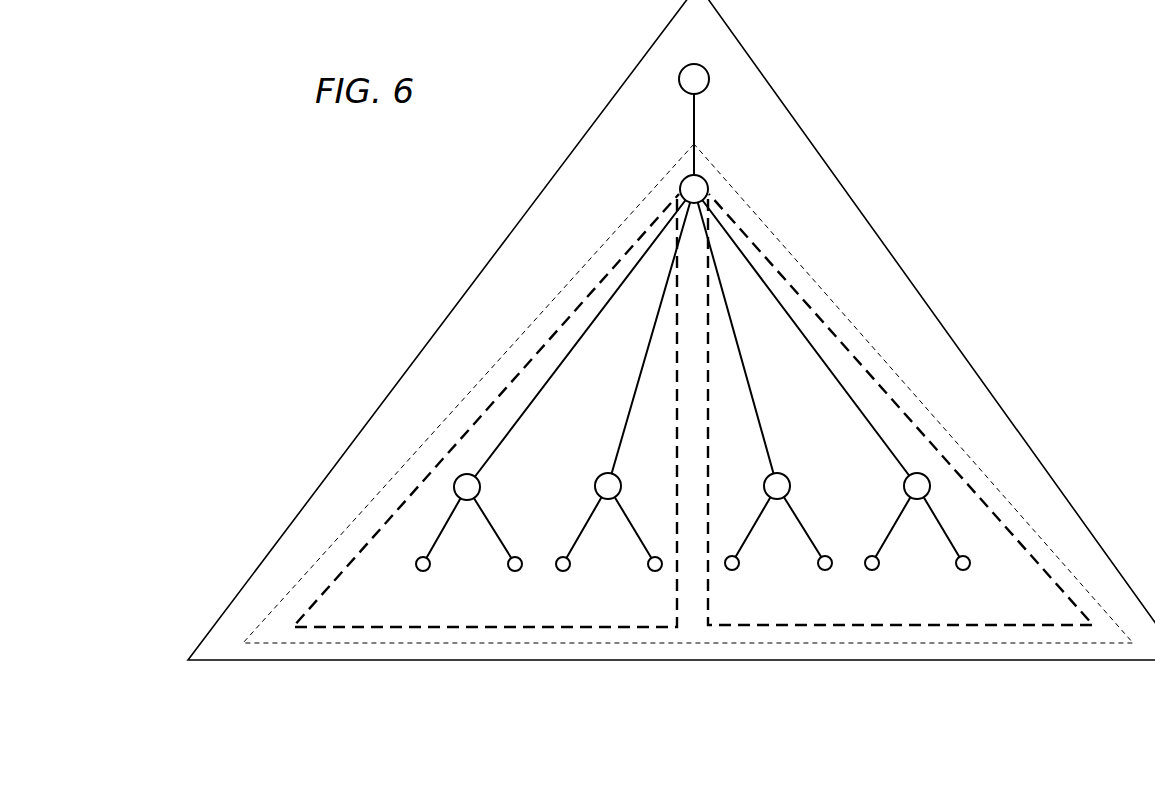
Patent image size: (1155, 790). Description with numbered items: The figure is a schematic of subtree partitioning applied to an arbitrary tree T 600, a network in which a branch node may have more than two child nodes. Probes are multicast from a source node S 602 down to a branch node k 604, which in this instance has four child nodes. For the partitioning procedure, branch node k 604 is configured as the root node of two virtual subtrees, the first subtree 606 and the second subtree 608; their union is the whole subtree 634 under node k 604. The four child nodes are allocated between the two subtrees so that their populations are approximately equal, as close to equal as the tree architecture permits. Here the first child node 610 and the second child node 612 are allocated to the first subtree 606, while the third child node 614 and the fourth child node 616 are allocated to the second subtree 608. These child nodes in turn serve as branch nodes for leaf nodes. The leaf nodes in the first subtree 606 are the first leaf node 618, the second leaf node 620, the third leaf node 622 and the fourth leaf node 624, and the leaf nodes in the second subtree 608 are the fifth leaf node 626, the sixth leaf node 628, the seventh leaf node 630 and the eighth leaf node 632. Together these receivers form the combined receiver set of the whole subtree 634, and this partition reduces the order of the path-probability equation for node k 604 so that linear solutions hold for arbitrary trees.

The arbitrary tree T 600 is at (536, 197).
The source node S 602 is at (709, 85).
The branch node k 604 is at (704, 176).
The subtree T_k,1 606 is at (623, 248).
The subtree T_k,2 608 is at (790, 258).
The child node d_1,1 610 is at (480, 477).
The child node d_2,1 612 is at (598, 476).
The child node d_1,2 614 is at (787, 476).
The child node d_2,2 616 is at (904, 481).
The leaf node R_1,1 618 is at (416, 561).
The leaf node R_2,1 620 is at (508, 563).
The leaf node R_3,1 622 is at (557, 559).
The leaf node R_4,1 624 is at (648, 564).
The leaf node R_1,2 626 is at (740, 563).
The leaf node R_2,2 628 is at (832, 558).
The leaf node R_3,2 630 is at (880, 563).
The leaf node R_4,2 632 is at (970, 565).
The subtree T_k,0 634 is at (518, 335).